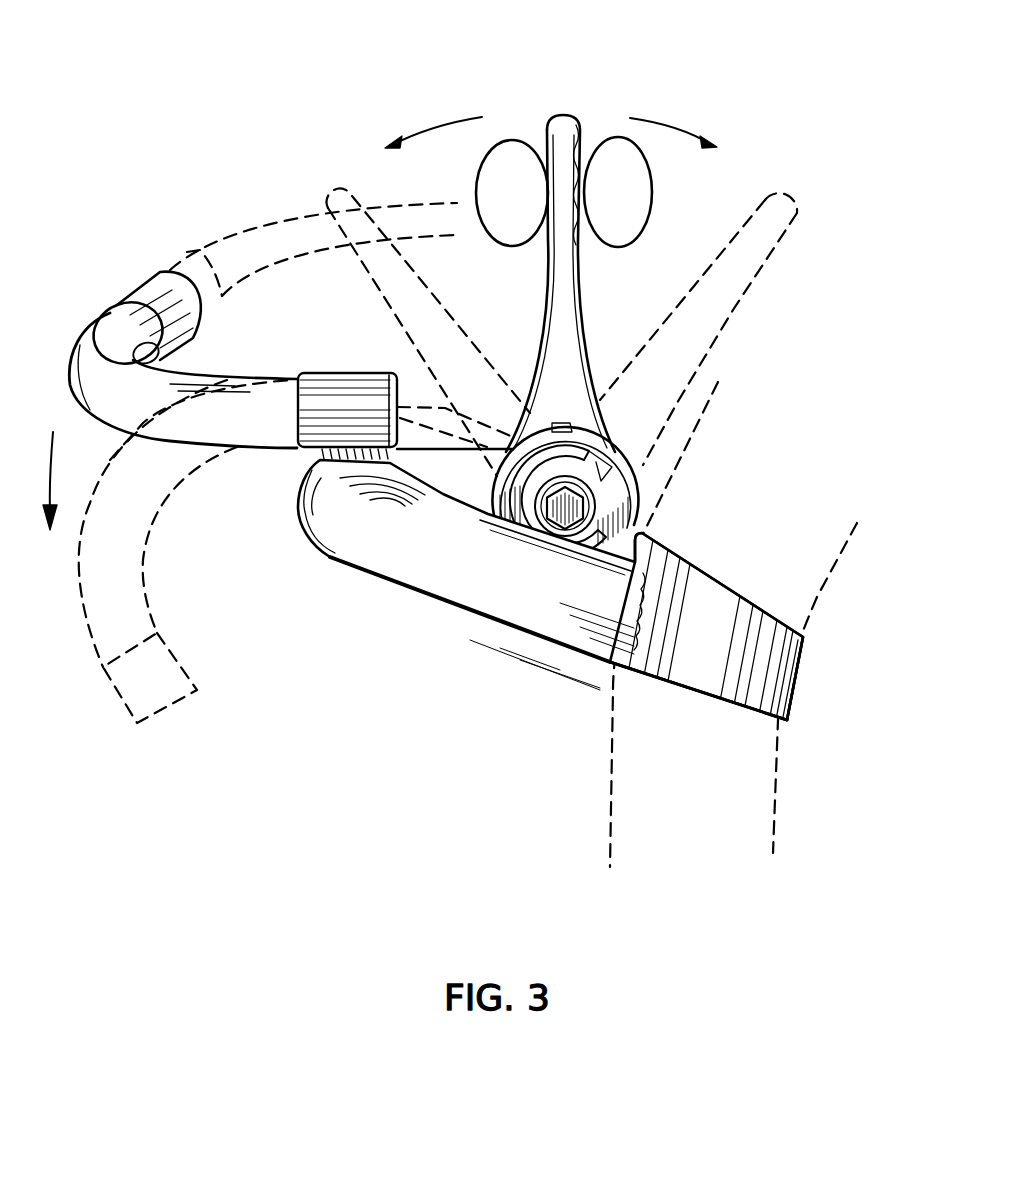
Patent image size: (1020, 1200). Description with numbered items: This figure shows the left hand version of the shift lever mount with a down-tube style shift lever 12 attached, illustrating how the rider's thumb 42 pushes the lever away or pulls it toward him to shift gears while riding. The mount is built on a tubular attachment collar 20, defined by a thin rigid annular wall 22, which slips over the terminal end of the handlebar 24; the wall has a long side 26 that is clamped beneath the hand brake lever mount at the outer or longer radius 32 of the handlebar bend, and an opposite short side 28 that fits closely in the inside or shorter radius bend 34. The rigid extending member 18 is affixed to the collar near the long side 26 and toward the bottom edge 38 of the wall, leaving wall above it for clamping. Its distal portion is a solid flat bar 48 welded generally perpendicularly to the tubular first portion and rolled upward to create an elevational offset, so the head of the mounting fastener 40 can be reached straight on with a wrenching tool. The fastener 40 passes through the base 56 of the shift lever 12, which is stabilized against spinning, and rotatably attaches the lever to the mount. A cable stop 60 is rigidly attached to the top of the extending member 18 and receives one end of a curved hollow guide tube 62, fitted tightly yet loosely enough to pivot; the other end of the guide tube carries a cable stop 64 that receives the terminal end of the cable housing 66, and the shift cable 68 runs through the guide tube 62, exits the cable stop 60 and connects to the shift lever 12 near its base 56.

The shift lever 12 is at (573, 117).
The extending member 18 is at (438, 565).
The attachment collar 20 is at (750, 671).
The annular wall 22 is at (723, 667).
The handlebar 24 is at (823, 582).
The long side 26 is at (653, 573).
The short side 28 is at (800, 688).
The outer or longer radius 32 is at (613, 695).
The shorter radius bend 34 is at (805, 627).
The bottom edge 38 is at (667, 620).
The mounting fastener 40 is at (578, 508).
The thumb 42 is at (513, 140).
The flat bar 48 is at (440, 478).
The base 56 is at (618, 487).
The cable stop 60 is at (297, 447).
The guide tube 62 is at (187, 372).
The cable stop 64 is at (143, 297).
The cable housing 66 is at (258, 224).
The shift cable 68 is at (447, 407).